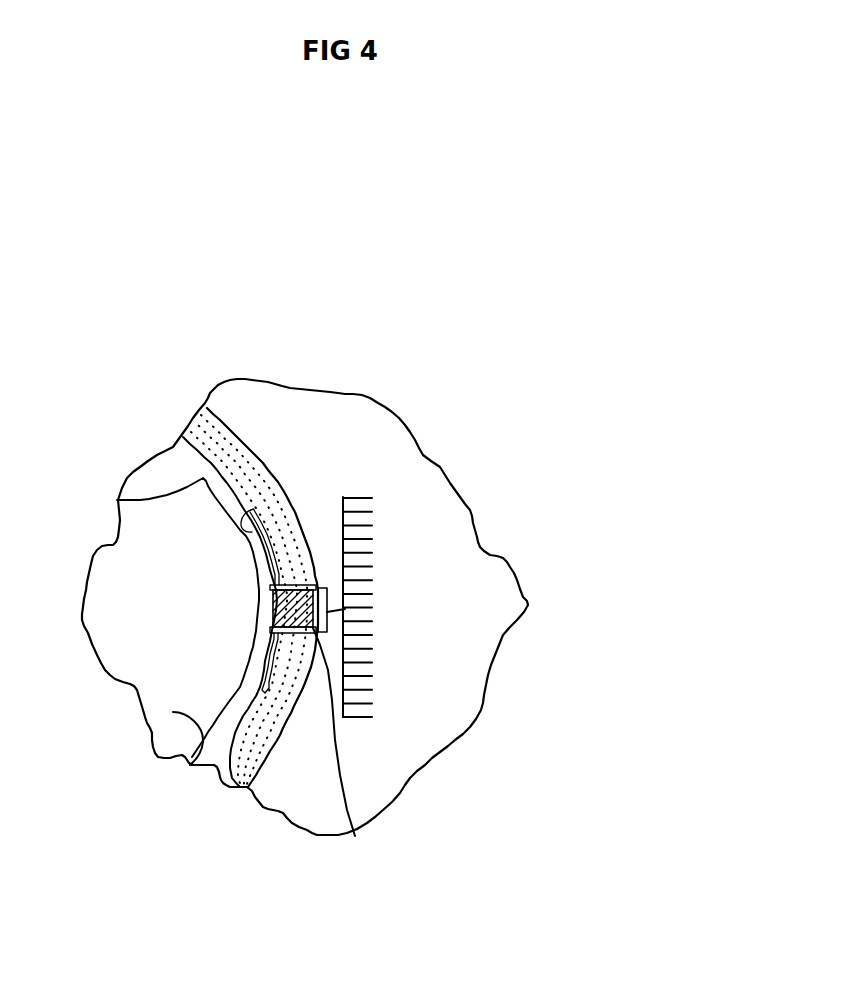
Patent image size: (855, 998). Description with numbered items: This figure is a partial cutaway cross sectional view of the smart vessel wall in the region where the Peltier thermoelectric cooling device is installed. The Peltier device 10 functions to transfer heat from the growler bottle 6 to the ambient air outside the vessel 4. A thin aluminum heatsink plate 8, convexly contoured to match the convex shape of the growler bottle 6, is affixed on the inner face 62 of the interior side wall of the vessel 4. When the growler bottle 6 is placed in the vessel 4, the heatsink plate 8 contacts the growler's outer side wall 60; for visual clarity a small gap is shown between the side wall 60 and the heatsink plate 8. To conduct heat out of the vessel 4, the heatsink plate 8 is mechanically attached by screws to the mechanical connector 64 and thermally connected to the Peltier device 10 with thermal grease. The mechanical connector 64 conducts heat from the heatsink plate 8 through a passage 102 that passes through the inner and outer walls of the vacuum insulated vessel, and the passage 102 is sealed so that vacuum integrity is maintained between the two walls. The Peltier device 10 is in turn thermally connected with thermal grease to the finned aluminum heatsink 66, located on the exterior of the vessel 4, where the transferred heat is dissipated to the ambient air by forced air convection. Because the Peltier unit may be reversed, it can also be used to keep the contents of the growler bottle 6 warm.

The vessel 4 is at (235, 538).
The growler bottle 6 is at (188, 683).
The heatsink plate 8 is at (310, 506).
The Peltier device 10 is at (453, 544).
The outer side wall 60 is at (281, 607).
The inner face 62 is at (284, 872).
The mechanical connector 64 is at (399, 770).
The finned aluminum heatsink 66 is at (438, 539).
The passage 102 is at (402, 421).